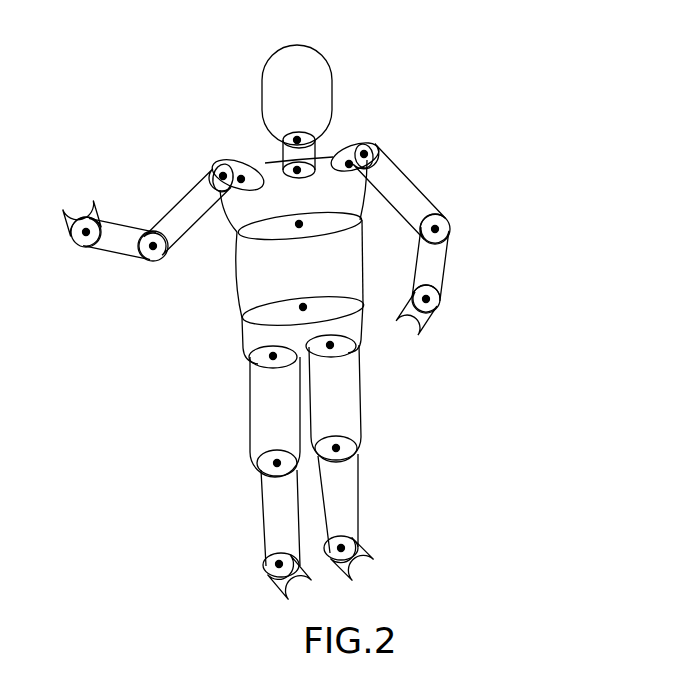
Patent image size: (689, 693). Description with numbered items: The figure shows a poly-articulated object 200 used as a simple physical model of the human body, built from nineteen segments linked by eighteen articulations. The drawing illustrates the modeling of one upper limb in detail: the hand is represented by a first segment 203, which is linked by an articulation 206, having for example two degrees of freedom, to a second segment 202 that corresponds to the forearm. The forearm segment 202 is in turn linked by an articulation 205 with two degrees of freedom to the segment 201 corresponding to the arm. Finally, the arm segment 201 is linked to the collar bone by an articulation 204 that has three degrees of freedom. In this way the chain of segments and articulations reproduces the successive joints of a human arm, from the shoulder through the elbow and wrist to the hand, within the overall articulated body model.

The poly-articulated object 200 is at (298, 315).
The segment corresponding to the arm 201 is at (402, 182).
The second segment corresponding to the forearm 202 is at (441, 267).
The first segment 203 is at (419, 328).
The articulation 204 is at (379, 149).
The articulation 205 is at (438, 228).
The articulation 206 is at (429, 299).